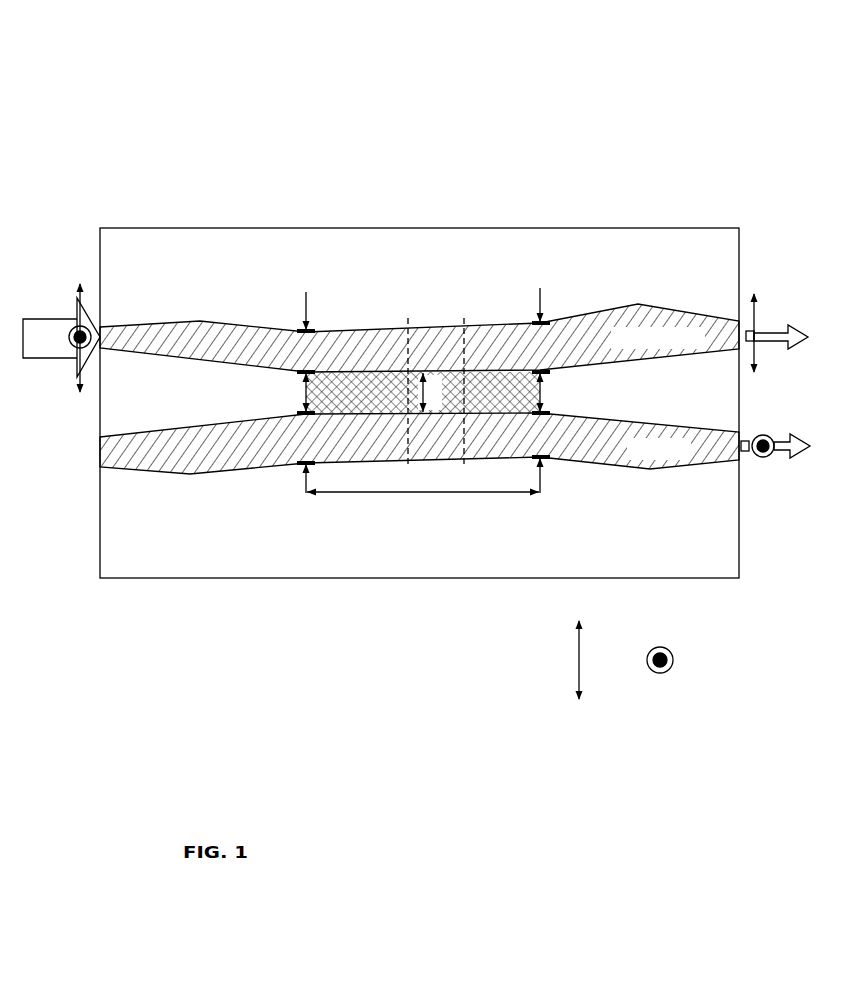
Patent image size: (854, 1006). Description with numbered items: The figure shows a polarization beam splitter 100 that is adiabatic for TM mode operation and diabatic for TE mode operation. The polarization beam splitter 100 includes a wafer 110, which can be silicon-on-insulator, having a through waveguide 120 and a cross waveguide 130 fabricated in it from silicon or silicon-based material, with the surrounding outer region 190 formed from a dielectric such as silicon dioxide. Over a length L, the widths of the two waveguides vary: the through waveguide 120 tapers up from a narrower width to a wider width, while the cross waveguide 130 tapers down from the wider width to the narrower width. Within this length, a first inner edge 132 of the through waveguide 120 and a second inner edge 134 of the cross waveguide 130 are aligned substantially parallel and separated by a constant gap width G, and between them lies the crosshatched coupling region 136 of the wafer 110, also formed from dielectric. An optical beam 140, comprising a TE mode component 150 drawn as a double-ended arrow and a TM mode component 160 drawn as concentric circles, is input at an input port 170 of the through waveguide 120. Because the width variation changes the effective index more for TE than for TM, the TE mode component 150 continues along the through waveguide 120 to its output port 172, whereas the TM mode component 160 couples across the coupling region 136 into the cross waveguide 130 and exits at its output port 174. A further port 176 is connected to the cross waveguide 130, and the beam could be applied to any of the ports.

The polarization beam splitter 100 is at (668, 58).
The wafer 110 is at (357, 228).
The through waveguide 120 is at (188, 321).
The cross waveguide 130 is at (190, 474).
The first inner edge 132 is at (378, 373).
The second inner edge 134 is at (478, 411).
The coupling region 136 is at (395, 383).
The optical beam 140 is at (61, 337).
The TE mode component 150 is at (78, 382).
The TM mode component 160 is at (68, 348).
The input port 170 is at (100, 335).
The output port of the through waveguide 172 is at (739, 321).
The output port of the cross waveguide 174 is at (738, 452).
The port 176 is at (100, 450).
The outer region 190 is at (435, 275).